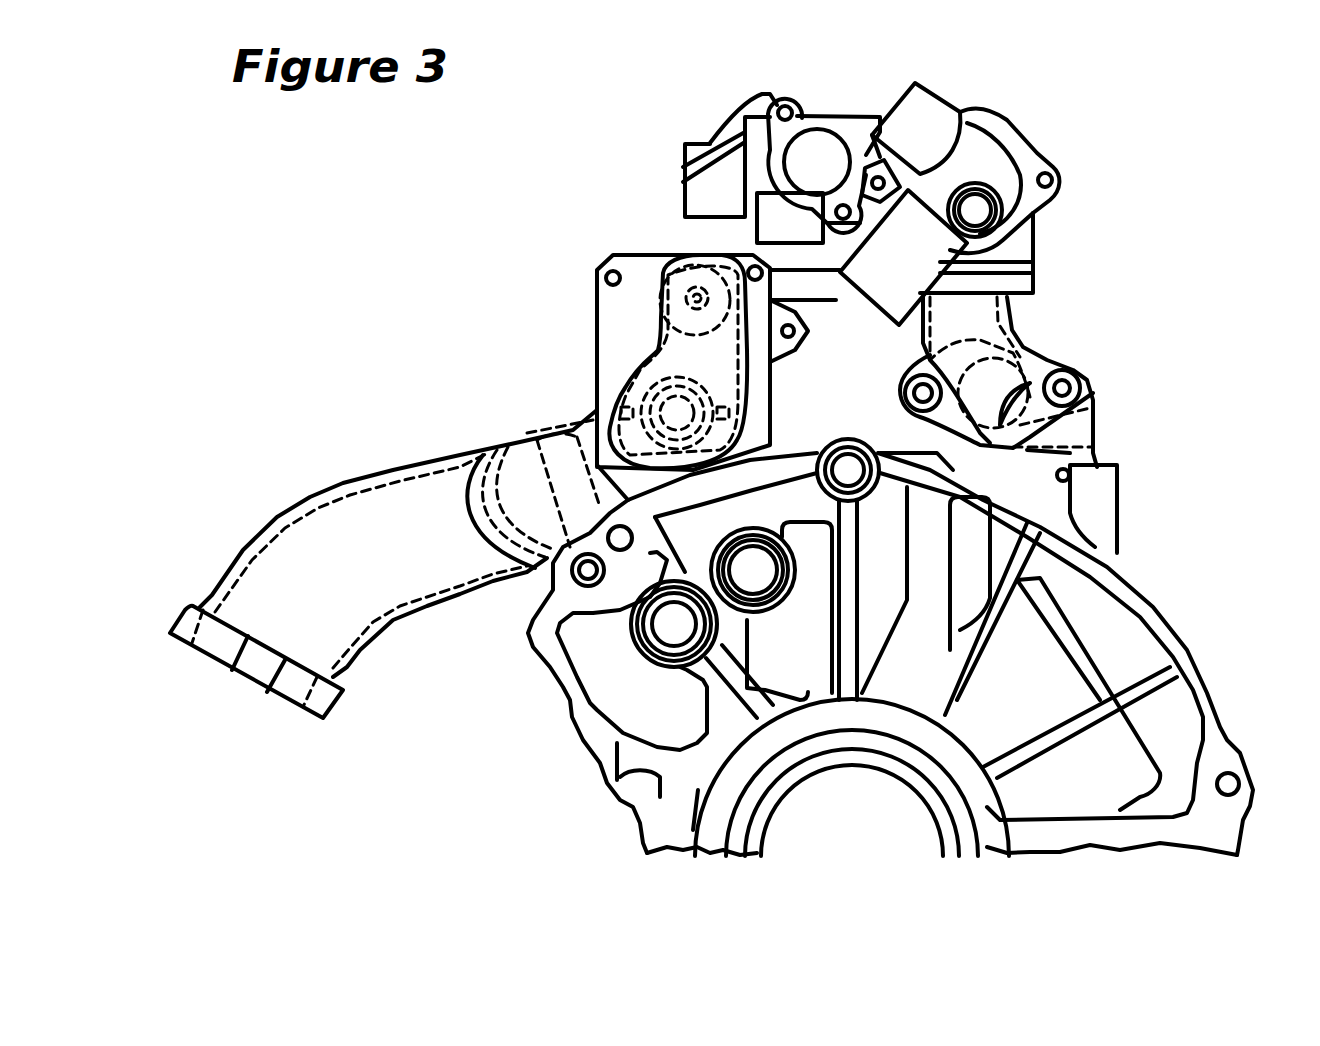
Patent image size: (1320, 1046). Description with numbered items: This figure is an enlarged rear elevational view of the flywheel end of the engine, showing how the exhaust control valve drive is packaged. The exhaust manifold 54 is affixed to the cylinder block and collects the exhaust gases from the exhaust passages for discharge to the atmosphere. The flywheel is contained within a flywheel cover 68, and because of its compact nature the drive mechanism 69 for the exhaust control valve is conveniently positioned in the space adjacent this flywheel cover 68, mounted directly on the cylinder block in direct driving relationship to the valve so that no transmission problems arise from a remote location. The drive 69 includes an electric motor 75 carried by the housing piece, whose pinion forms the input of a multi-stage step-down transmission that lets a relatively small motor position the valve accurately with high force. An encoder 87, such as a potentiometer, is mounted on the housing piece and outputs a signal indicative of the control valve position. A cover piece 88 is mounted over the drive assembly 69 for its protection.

The exhaust manifold 54 is at (348, 538).
The flywheel cover 68 is at (1227, 832).
The drive mechanism 69 is at (628, 176).
The electric motor 75 is at (690, 310).
The encoder 87 is at (626, 393).
The cover piece 88 is at (658, 280).